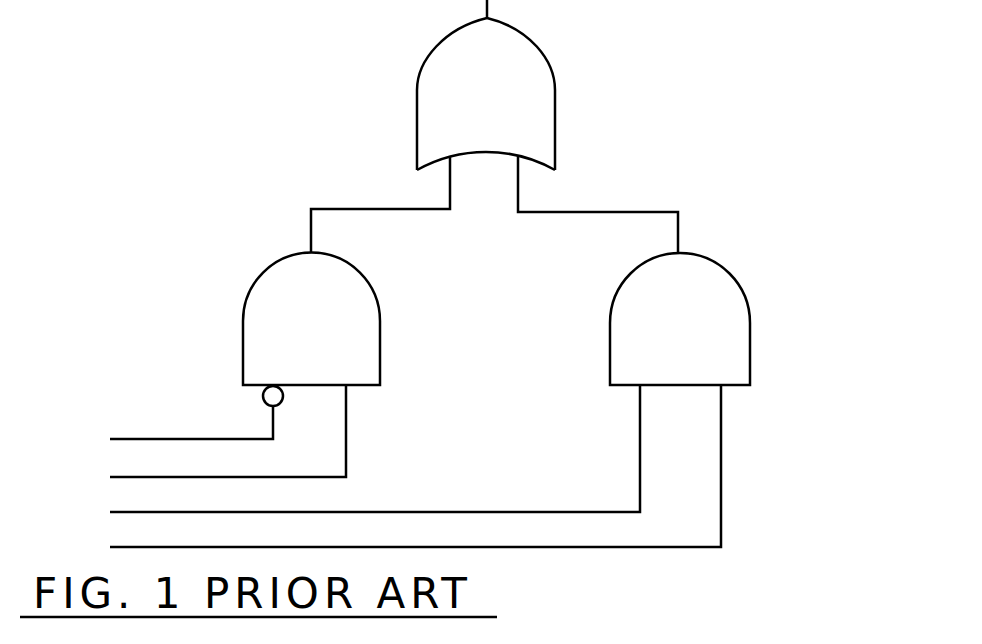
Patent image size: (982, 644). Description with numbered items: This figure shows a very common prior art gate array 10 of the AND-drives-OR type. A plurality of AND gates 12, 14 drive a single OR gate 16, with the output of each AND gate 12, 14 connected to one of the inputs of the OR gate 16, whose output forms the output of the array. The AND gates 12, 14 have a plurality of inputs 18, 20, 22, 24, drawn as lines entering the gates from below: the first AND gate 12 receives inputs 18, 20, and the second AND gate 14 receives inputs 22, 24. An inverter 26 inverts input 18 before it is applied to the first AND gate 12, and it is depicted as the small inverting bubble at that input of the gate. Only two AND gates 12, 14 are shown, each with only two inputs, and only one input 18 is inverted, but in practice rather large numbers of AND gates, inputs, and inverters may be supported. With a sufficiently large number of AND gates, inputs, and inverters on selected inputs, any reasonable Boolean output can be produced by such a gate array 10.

The gate array 10 is at (740, 228).
The AND gate 12 is at (324, 350).
The AND gate 14 is at (694, 341).
The OR gate 16 is at (500, 117).
The input 18 is at (171, 429).
The input 20 is at (207, 436).
The input 22 is at (354, 453).
The input 24 is at (395, 471).
The inverter 26 is at (258, 407).